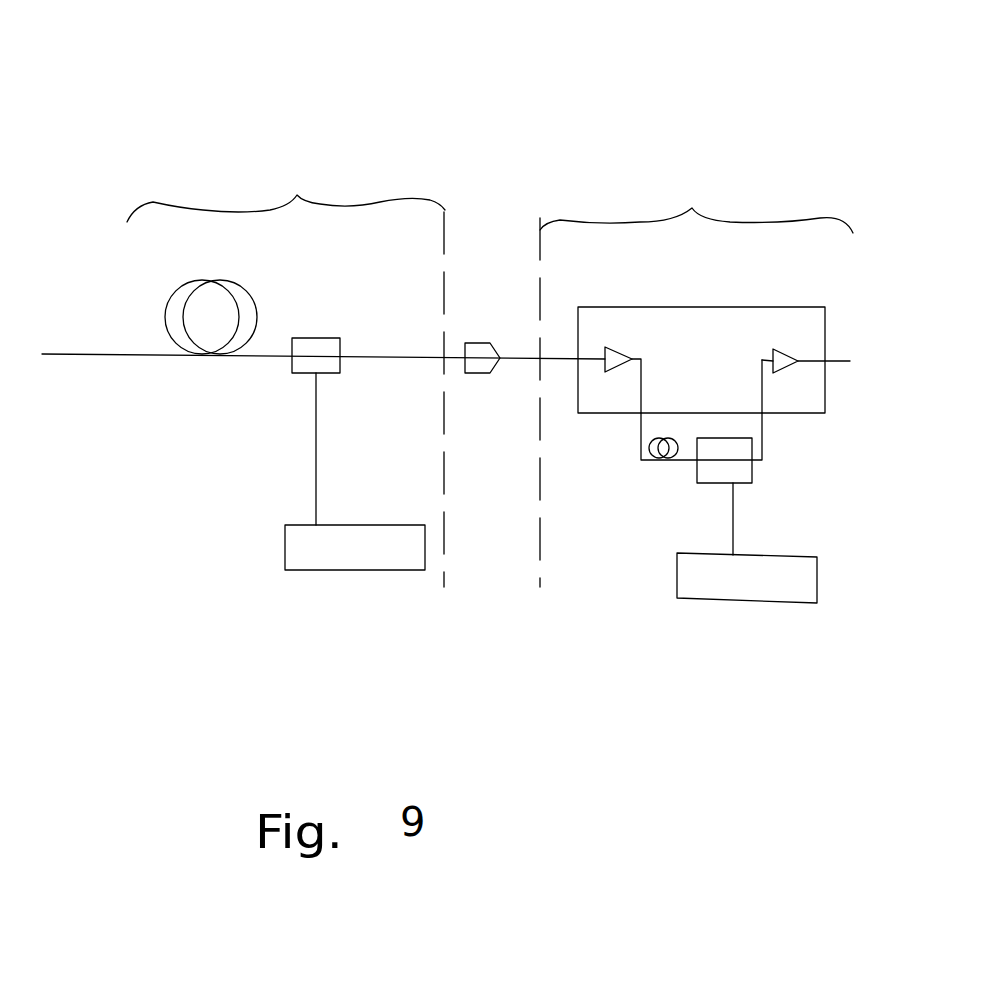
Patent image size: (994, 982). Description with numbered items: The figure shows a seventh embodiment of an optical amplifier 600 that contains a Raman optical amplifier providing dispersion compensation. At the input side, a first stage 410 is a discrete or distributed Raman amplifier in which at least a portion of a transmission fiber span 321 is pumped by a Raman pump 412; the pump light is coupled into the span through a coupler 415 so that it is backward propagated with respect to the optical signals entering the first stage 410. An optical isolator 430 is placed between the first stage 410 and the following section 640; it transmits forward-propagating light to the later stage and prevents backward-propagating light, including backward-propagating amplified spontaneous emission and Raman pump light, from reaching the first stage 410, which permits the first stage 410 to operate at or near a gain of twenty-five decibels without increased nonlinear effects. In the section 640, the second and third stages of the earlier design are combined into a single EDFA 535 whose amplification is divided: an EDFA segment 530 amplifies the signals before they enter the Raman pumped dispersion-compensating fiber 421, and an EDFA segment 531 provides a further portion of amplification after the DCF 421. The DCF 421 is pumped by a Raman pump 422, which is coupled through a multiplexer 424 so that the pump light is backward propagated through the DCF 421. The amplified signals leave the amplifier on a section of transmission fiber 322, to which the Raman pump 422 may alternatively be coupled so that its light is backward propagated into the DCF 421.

The optical amplifier 600 is at (550, 52).
The first stage 410 is at (297, 195).
The amplifier section 640 is at (692, 208).
The fiber span 321 is at (253, 297).
The 1450:1550 coupler 415 is at (300, 375).
The Raman pump 412 is at (355, 549).
The optical isolator 430 is at (478, 342).
The EDFA 535 is at (740, 306).
The EDFA segment 530 is at (617, 347).
The EDFA segment 531 is at (783, 350).
The transmission fiber 322 is at (842, 358).
The dispersion-compensating fiber 421 is at (658, 438).
The multiplexer 424 is at (752, 445).
The Raman pump 422 is at (747, 578).